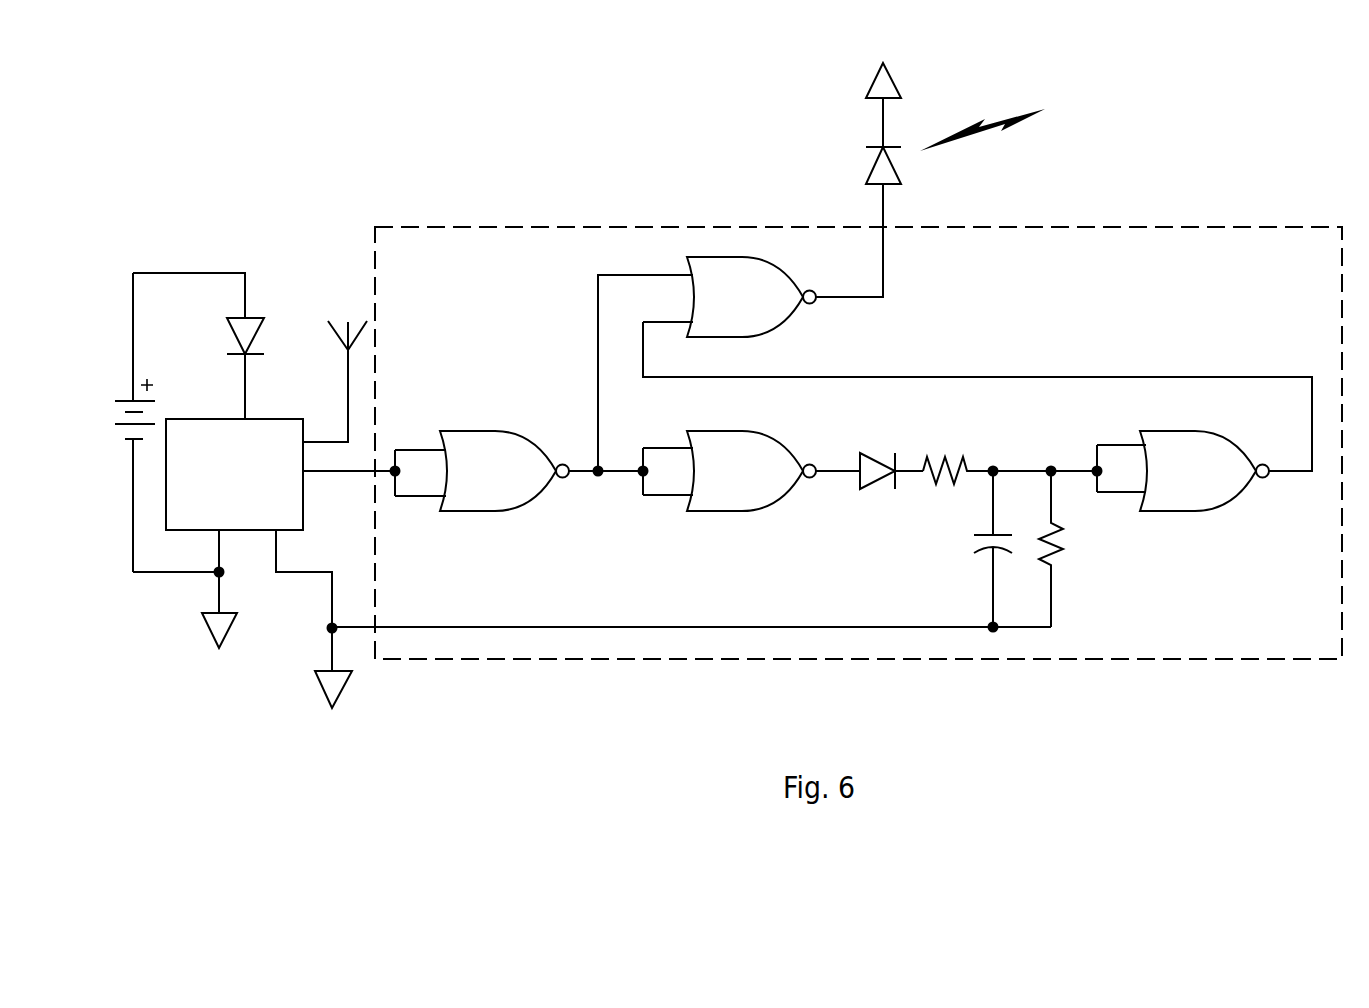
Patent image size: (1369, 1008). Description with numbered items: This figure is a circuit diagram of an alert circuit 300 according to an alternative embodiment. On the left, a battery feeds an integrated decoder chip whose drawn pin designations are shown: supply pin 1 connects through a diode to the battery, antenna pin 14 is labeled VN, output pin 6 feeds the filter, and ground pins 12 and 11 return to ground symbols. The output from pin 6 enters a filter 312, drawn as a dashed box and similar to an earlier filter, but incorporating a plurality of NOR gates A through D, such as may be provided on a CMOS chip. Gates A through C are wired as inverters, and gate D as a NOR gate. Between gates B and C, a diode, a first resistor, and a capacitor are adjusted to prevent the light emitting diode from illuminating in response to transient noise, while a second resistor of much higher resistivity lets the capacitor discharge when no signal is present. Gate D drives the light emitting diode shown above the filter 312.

The alert circuit 300 is at (420, 760).
The filter 312 is at (1177, 225).
The MT8182D pin 1 (supply input) 1 is at (246, 400).
The MT8182D pin 14 (VN antenna output) 14 is at (322, 388).
The MT8182D pin 6 (output to gate A) 6 is at (340, 477).
The MT8182D pin 12 (GND) 12 is at (185, 577).
The MT8182D pin 11 (ground return) 11 is at (309, 607).